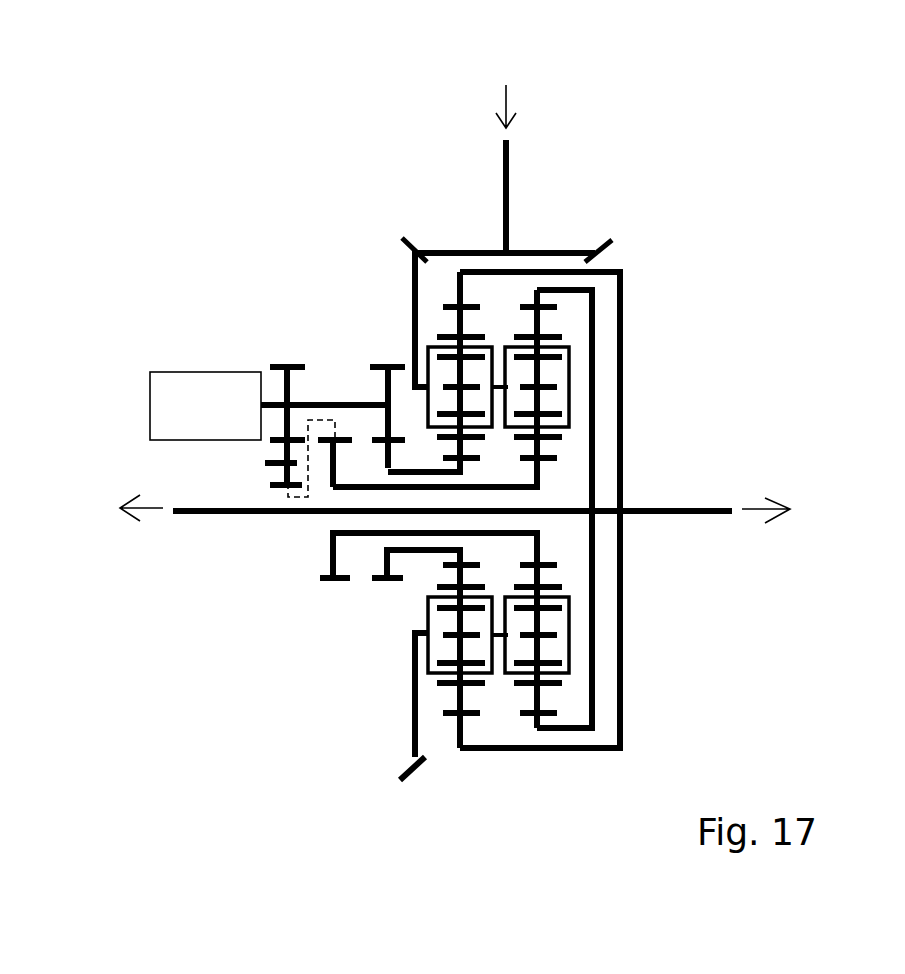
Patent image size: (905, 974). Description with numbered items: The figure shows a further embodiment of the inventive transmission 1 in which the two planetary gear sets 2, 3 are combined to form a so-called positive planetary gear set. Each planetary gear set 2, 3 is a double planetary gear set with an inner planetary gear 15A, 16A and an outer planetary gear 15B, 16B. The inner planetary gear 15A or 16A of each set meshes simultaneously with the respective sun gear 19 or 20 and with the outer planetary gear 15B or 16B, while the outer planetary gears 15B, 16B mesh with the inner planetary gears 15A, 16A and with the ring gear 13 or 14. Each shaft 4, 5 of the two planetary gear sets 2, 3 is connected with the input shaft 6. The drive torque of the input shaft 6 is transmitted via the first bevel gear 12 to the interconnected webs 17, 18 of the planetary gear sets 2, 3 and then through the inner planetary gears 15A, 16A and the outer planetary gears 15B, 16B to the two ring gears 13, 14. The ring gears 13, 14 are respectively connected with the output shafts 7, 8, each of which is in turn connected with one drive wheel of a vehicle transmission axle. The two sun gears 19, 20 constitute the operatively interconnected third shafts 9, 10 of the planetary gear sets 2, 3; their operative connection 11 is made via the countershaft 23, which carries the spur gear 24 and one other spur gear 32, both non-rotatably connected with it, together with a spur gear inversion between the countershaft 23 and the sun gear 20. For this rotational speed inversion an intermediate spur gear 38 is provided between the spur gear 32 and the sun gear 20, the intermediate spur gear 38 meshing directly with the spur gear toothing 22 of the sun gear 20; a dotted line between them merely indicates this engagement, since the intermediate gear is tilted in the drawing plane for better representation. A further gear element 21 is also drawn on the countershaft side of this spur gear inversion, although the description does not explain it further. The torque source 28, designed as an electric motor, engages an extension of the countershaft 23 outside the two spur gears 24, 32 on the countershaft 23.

The transmission 1 is at (145, 168).
The planetary gear set 2 is at (364, 300).
The planetary gear set 3 is at (636, 388).
The shaft 4 is at (388, 363).
The shaft 5 is at (498, 372).
The input shaft 6 is at (505, 142).
The output shaft 7 is at (187, 515).
The output shaft 8 is at (720, 503).
The third shaft 9 is at (369, 568).
The third shaft 10 is at (318, 555).
The operative connection 11 is at (246, 342).
The first bevel gear 12 is at (438, 250).
The ring gear 13 is at (450, 735).
The ring gear 14 is at (537, 720).
The inner planetary gear 15A is at (462, 579).
The outer planetary gear 15B is at (457, 706).
The inner planetary gear 16A is at (543, 570).
The outer planetary gear 16B is at (540, 700).
The web 17 is at (418, 637).
The web 18 is at (500, 640).
The sun gear 19 is at (388, 582).
The sun gear 20 is at (327, 582).
The gear wheel 21 is at (371, 438).
The spur gear toothing 22 is at (332, 437).
The countershaft 23 is at (302, 367).
The spur gear 24 is at (286, 432).
The torque source 28 is at (168, 368).
The spur gear 32 is at (404, 336).
The intermediate spur gear 38 is at (280, 475).